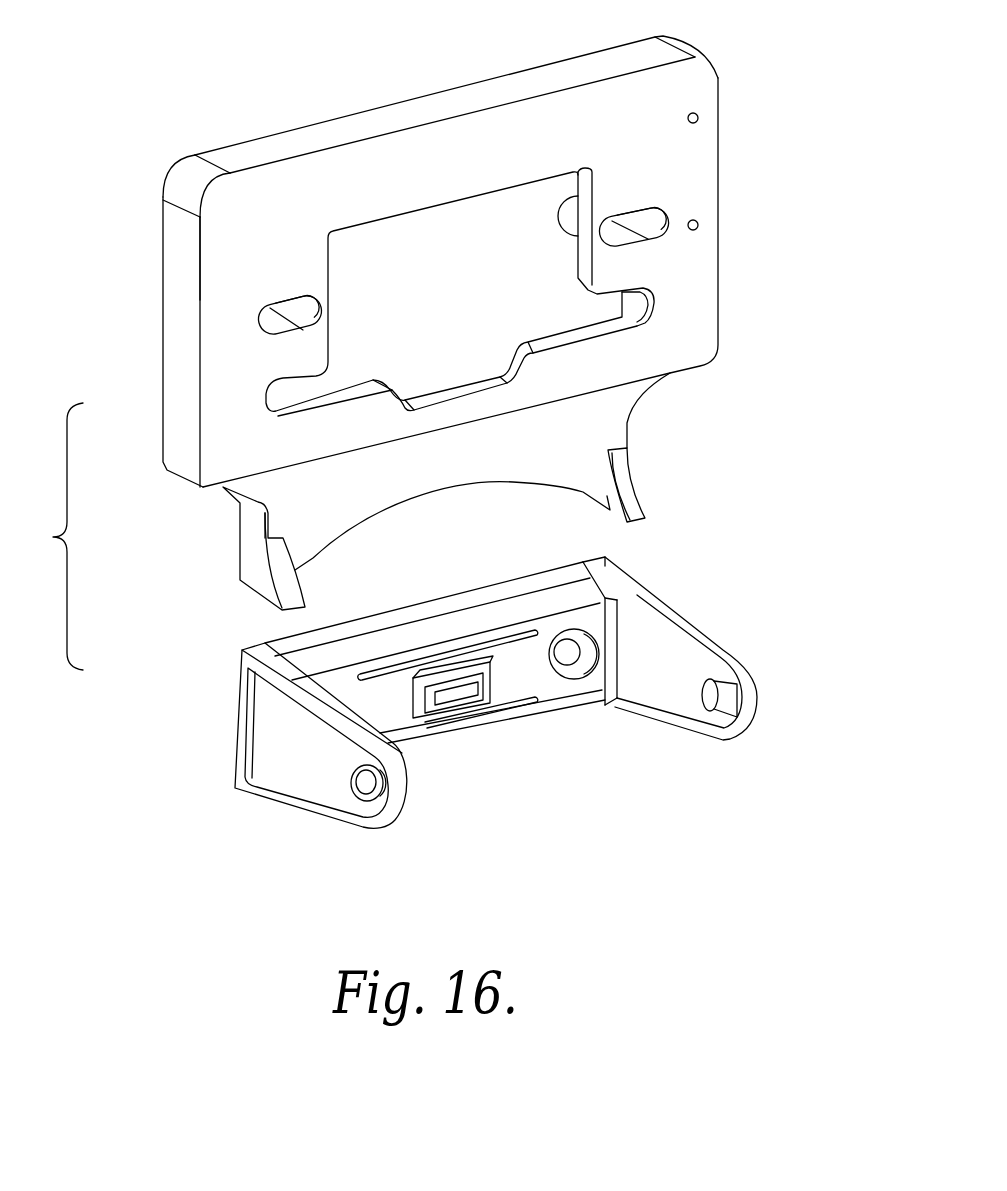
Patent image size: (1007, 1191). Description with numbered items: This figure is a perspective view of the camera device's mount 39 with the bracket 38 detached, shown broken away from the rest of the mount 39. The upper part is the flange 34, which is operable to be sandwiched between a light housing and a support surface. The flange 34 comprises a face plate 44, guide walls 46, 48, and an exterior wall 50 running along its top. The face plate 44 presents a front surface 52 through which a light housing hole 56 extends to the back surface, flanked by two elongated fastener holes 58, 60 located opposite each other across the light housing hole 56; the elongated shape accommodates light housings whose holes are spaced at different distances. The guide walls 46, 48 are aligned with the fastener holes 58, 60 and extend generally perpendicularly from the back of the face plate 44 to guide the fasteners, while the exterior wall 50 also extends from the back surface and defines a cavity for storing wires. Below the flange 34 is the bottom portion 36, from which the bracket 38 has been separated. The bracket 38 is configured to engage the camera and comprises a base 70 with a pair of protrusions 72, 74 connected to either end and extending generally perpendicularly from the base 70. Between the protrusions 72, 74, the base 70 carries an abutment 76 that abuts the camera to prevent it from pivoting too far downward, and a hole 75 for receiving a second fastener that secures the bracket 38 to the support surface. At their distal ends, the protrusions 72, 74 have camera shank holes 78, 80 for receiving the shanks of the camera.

The flange 34 is at (733, 157).
The bottom portion 36 is at (628, 426).
The bracket 38 is at (488, 712).
The mount 39 is at (205, 146).
The face plate 44 is at (697, 82).
The guide wall 46 is at (308, 313).
The guide wall 48 is at (567, 222).
The exterior wall 50 is at (388, 115).
The front surface 52 is at (284, 218).
The light housing hole 56 is at (418, 246).
The fastener hole 58 is at (270, 335).
The fastener hole 60 is at (655, 232).
The base 70 is at (507, 723).
The protrusion 72 is at (283, 793).
The protrusion 74 is at (710, 630).
The hole 75 is at (567, 667).
The abutment 76 is at (450, 703).
The camera shank hole 78 is at (367, 787).
The camera shank hole 80 is at (712, 700).